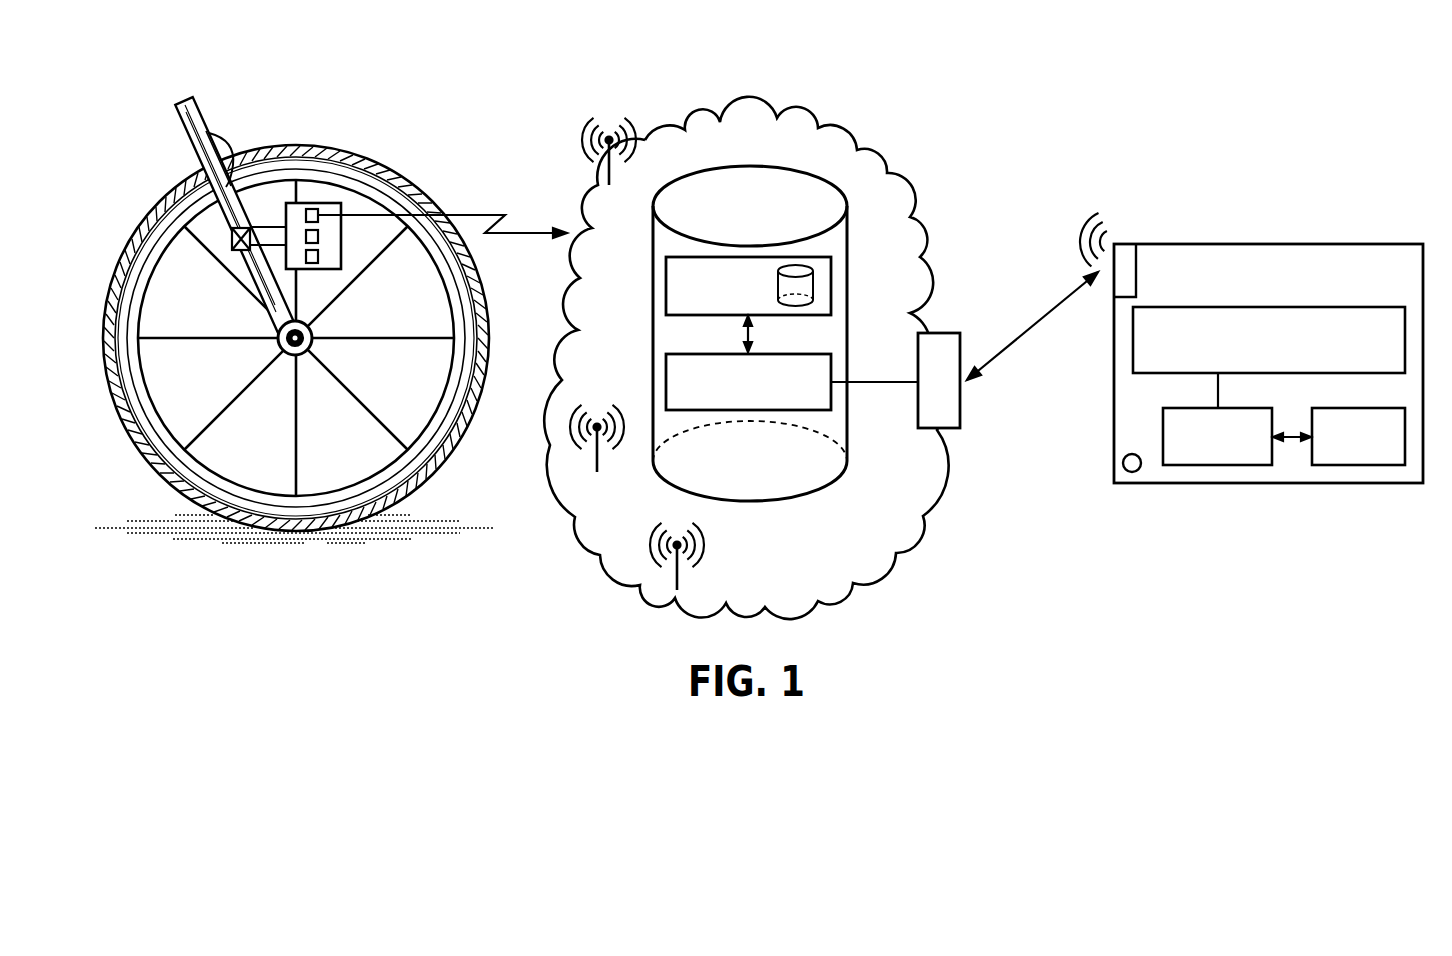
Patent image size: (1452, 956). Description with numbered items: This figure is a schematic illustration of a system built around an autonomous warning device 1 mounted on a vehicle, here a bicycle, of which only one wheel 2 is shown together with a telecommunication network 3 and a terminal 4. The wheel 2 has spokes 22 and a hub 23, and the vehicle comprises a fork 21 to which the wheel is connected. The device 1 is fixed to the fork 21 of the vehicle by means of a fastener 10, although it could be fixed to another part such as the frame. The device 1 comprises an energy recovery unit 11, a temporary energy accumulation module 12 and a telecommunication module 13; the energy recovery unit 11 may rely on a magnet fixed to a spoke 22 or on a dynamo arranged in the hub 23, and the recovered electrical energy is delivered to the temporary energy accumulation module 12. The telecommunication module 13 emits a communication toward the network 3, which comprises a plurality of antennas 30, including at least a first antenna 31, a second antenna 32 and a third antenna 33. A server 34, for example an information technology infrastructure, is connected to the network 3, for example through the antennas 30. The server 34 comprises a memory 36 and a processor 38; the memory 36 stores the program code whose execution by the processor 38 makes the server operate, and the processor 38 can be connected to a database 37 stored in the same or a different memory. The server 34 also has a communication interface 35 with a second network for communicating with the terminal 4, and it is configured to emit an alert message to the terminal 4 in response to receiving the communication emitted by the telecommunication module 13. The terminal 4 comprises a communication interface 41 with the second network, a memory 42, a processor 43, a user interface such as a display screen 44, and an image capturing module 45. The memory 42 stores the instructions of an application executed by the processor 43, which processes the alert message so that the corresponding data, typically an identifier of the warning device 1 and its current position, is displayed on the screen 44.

The autonomous warning device 1 is at (358, 202).
The wheel 2 is at (139, 215).
The telecommunication network 3 is at (807, 108).
The terminal 4 is at (1235, 355).
The fastener 10 is at (248, 232).
The energy recovery unit 11 is at (320, 257).
The temporary energy accumulation module 12 is at (320, 238).
The telecommunication module 13 is at (318, 208).
The fork 21 is at (203, 120).
The spoke 22 is at (226, 404).
The hub 23 is at (305, 353).
The antennas 30 is at (596, 362).
The first antenna 31 is at (677, 580).
The second antenna 32 is at (597, 443).
The third antenna 33 is at (592, 117).
The server 34 is at (826, 301).
The communication interface 35 is at (961, 406).
The memory 36 is at (831, 258).
The database 37 is at (815, 285).
The processor 38 is at (831, 400).
The communication interface 41 is at (1127, 243).
The memory 42 is at (1377, 467).
The processor 43 is at (1192, 467).
The display screen 44 is at (1247, 307).
The image capturing module 45 is at (1123, 465).